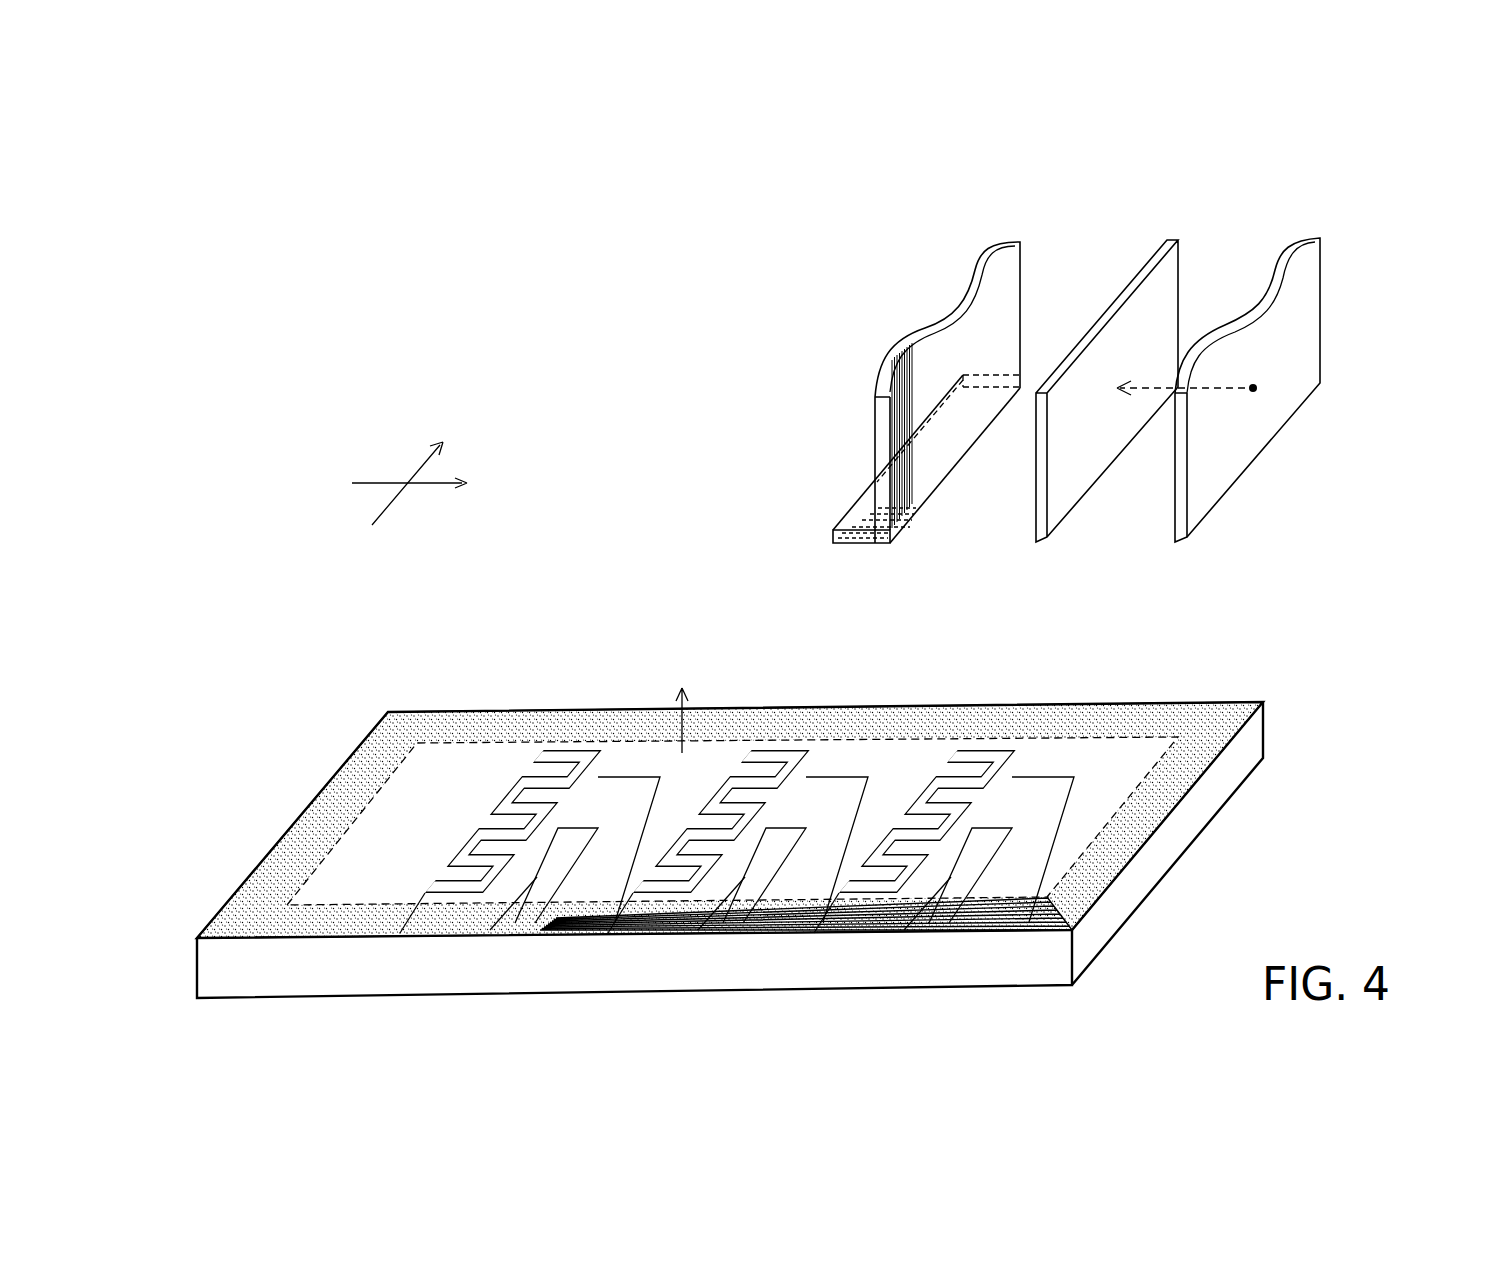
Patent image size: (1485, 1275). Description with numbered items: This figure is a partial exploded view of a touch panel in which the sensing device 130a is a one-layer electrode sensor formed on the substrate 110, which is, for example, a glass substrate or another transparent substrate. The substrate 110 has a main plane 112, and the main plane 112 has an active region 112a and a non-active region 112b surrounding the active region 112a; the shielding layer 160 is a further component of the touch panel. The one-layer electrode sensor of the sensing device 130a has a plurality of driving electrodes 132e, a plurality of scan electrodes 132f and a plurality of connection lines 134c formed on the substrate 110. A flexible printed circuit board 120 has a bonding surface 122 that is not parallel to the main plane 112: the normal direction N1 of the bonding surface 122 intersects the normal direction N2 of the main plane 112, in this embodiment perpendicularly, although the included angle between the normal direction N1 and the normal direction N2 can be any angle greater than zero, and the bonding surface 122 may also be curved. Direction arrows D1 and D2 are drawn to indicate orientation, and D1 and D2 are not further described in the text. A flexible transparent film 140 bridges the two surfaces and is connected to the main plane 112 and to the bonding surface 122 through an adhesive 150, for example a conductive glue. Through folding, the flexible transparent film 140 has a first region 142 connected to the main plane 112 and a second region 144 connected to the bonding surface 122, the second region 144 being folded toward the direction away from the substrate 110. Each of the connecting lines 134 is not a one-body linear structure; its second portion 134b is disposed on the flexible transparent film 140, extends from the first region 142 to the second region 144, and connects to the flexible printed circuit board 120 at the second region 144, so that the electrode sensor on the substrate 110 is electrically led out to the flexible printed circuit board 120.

The substrate 110 is at (1118, 908).
The main plane 112 is at (633, 654).
The active region 112a is at (560, 740).
The non-active region 112b is at (543, 710).
The flexible printed circuit board 120 is at (1219, 419).
The bonding surface 122 is at (1162, 500).
The sensing device 130a is at (1246, 664).
The driving electrodes 132e is at (777, 750).
The scan electrodes 132f is at (813, 757).
The connecting lines 134 is at (879, 576).
The second portion 134b is at (863, 547).
The connection lines 134c is at (1083, 895).
The flexible transparent film 140 is at (897, 267).
The first region 142 is at (906, 456).
The second region 144 is at (947, 320).
The adhesive 150 is at (1040, 502).
The shielding layer 160 is at (353, 770).
The normal direction of the bonding surface N1 is at (1192, 369).
The normal direction of the main plane N2 is at (681, 702).
The first direction D1 is at (424, 485).
The second direction D2 is at (417, 466).